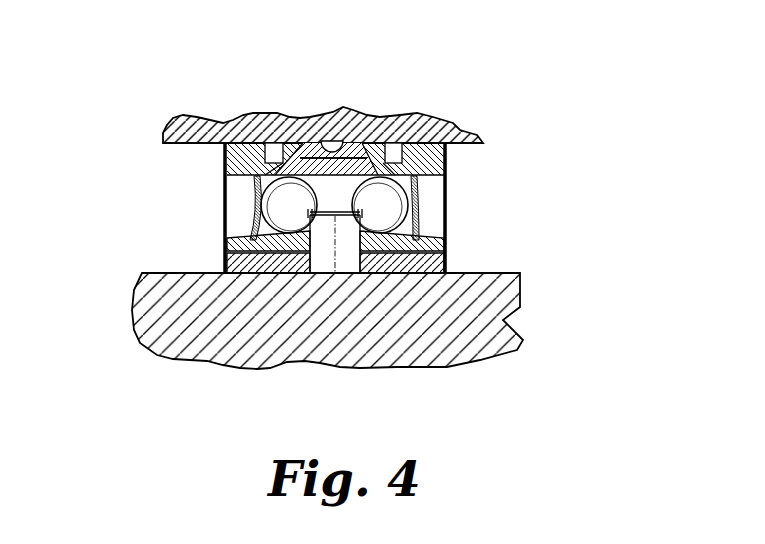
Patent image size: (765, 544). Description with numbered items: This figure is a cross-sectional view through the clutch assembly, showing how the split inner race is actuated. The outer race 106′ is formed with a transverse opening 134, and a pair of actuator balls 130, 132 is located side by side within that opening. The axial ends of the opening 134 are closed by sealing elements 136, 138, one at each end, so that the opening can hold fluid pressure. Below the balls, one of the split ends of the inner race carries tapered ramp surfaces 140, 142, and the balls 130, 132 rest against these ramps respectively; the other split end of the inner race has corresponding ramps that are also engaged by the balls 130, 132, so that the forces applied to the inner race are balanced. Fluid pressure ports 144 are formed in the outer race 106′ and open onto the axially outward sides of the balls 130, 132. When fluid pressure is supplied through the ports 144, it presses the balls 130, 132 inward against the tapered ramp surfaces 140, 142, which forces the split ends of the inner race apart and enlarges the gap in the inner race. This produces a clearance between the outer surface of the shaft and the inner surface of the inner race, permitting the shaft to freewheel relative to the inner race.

The outer race 106′ is at (422, 140).
The actuator ball 130 is at (223, 142).
The actuator ball 132 is at (385, 197).
The transverse opening 134 is at (362, 157).
The sealing element 136 is at (412, 233).
The sealing element 138 is at (252, 223).
The tapered ramp surface 140 is at (318, 257).
The tapered ramp surface 142 is at (353, 247).
The fluid pressure port 144 is at (274, 193).